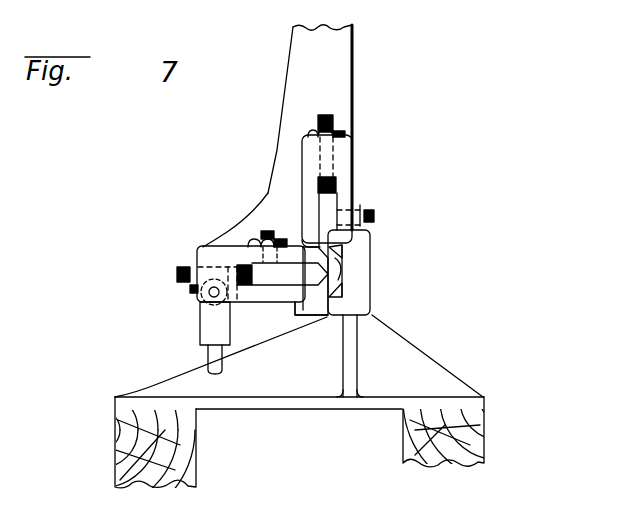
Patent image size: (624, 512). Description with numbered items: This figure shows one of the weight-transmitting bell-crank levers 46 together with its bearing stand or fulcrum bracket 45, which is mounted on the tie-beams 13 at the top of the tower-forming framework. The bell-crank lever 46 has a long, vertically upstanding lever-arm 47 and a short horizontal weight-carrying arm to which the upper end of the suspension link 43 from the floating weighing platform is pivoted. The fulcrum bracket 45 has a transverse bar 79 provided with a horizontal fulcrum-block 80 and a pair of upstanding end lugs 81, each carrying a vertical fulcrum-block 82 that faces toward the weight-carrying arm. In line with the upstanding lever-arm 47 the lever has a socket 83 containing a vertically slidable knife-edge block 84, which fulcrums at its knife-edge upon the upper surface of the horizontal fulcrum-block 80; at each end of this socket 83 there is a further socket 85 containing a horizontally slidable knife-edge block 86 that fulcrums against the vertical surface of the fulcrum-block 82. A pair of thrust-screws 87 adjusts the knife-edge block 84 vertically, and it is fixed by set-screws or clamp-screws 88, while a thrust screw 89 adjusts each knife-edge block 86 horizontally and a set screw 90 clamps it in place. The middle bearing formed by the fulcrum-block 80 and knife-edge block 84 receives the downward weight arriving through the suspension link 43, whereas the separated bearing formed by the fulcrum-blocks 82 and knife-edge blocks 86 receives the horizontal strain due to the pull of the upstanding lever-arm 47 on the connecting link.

The tie-beams 13 is at (200, 463).
The suspension link 43 is at (208, 358).
The bearing stand or fulcrum bracket 45 is at (428, 362).
The weight-transmitting bell-crank lever 46 is at (273, 190).
The upstanding lever-arm 47 is at (345, 78).
The transverse bar 79 is at (307, 308).
The horizontal fulcrum-block 80 is at (342, 262).
The upstanding end lug 81 is at (360, 283).
The vertical fulcrum-block 82 is at (373, 303).
The socket 83 is at (336, 185).
The vertically slidable knife-edge block 84 is at (330, 198).
The socket 85 is at (247, 247).
The horizontally slidable knife-edge block 86 is at (243, 265).
The thrust-screw 87 is at (330, 122).
The set-screw or clamp-screw 88 is at (374, 219).
The thrust screw 89 is at (197, 282).
The set screw 90 is at (263, 273).